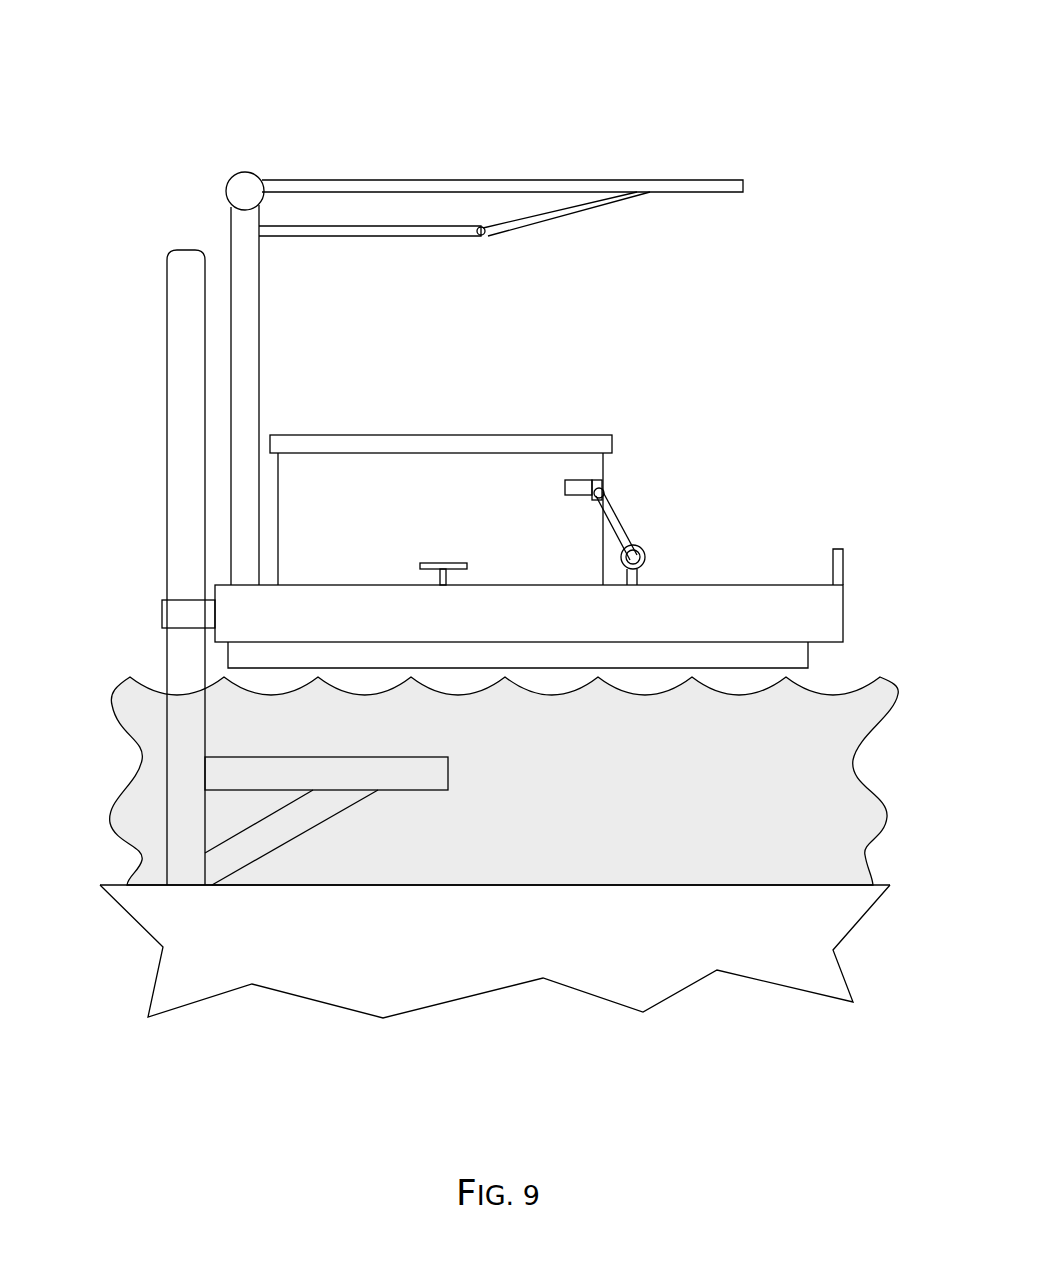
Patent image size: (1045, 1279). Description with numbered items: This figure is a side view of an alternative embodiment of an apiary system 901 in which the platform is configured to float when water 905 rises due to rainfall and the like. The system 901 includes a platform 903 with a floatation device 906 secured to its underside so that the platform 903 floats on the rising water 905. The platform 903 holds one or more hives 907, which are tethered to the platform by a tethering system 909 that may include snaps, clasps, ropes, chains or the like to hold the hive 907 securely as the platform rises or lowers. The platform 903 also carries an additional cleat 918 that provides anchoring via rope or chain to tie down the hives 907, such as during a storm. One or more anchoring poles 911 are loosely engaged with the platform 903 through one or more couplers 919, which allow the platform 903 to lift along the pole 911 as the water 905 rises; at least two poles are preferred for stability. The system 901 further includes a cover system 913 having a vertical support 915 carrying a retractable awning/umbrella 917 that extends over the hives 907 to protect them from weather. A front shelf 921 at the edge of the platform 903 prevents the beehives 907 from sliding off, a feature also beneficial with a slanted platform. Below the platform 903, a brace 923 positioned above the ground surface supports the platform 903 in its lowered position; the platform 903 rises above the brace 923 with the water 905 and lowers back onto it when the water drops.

The alternative embodiment apiary system 901 is at (131, 58).
The platform 903 is at (722, 585).
The water 905 is at (840, 695).
The floatation device 906 is at (548, 668).
The hive 907 is at (278, 510).
The tethering system 909 is at (645, 512).
The anchoring pole 911 is at (167, 305).
The cover system 913 is at (484, 332).
The vertical support 915 is at (259, 332).
The retractable awning/umbrella 917 is at (632, 180).
The cleat 918 is at (440, 563).
The coupler 919 is at (162, 613).
The front shelf 921 is at (843, 548).
The brace 923 is at (403, 790).